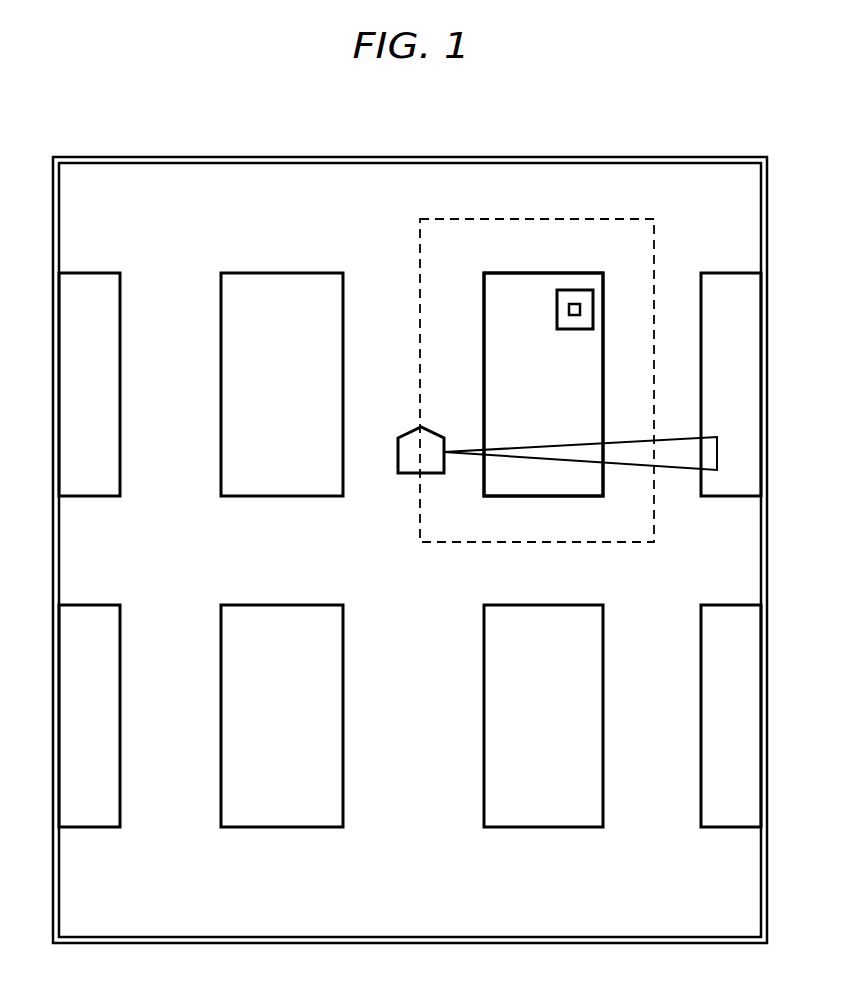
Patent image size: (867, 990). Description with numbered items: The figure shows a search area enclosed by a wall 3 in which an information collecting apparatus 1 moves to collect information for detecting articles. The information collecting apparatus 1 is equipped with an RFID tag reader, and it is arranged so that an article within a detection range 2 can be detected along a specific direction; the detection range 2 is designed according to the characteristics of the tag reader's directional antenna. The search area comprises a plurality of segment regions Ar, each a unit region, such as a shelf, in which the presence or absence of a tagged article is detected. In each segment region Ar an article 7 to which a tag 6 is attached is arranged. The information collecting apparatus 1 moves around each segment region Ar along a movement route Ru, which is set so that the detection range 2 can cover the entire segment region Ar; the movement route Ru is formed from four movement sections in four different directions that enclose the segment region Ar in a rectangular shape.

The information collecting apparatus 1 is at (410, 475).
The detection range 2 is at (628, 441).
The wall 3 is at (163, 157).
The tag 6 is at (577, 304).
The article 7 is at (564, 290).
The segment region Ar is at (517, 295).
The movement route Ru is at (442, 219).